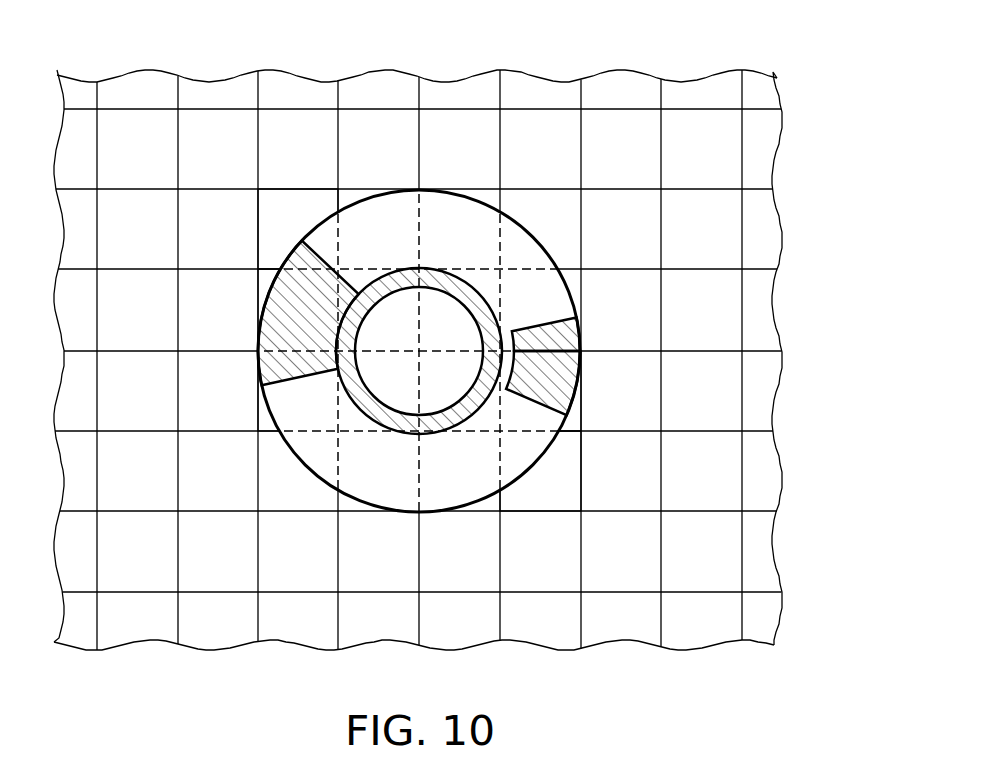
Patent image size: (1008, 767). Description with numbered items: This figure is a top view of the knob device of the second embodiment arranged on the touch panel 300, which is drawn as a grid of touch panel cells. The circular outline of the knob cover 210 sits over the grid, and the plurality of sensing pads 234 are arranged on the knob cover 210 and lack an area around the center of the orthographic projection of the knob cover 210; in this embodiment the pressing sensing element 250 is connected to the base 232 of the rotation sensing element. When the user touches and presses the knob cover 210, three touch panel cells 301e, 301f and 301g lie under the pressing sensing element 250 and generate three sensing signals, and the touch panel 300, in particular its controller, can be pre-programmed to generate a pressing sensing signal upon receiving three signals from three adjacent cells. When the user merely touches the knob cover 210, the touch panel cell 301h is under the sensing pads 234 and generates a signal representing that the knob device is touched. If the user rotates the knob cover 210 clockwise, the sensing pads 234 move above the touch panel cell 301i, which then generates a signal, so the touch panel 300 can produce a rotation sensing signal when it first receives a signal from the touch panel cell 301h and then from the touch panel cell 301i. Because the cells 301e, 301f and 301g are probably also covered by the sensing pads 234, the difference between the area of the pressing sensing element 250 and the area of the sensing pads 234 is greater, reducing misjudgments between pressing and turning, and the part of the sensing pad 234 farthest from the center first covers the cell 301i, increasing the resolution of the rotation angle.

The touch panel 300 is at (713, 72).
The touch panel cell 301e is at (287, 230).
The touch panel cell 301f is at (265, 278).
The touch panel cell 301g is at (262, 415).
The touch panel cell 301h is at (537, 417).
The touch panel cell 301i is at (522, 455).
The knob cover 210 is at (435, 207).
The base 232 is at (433, 270).
The sensing pads 234 is at (555, 335).
The pressing sensing element 250 is at (288, 325).